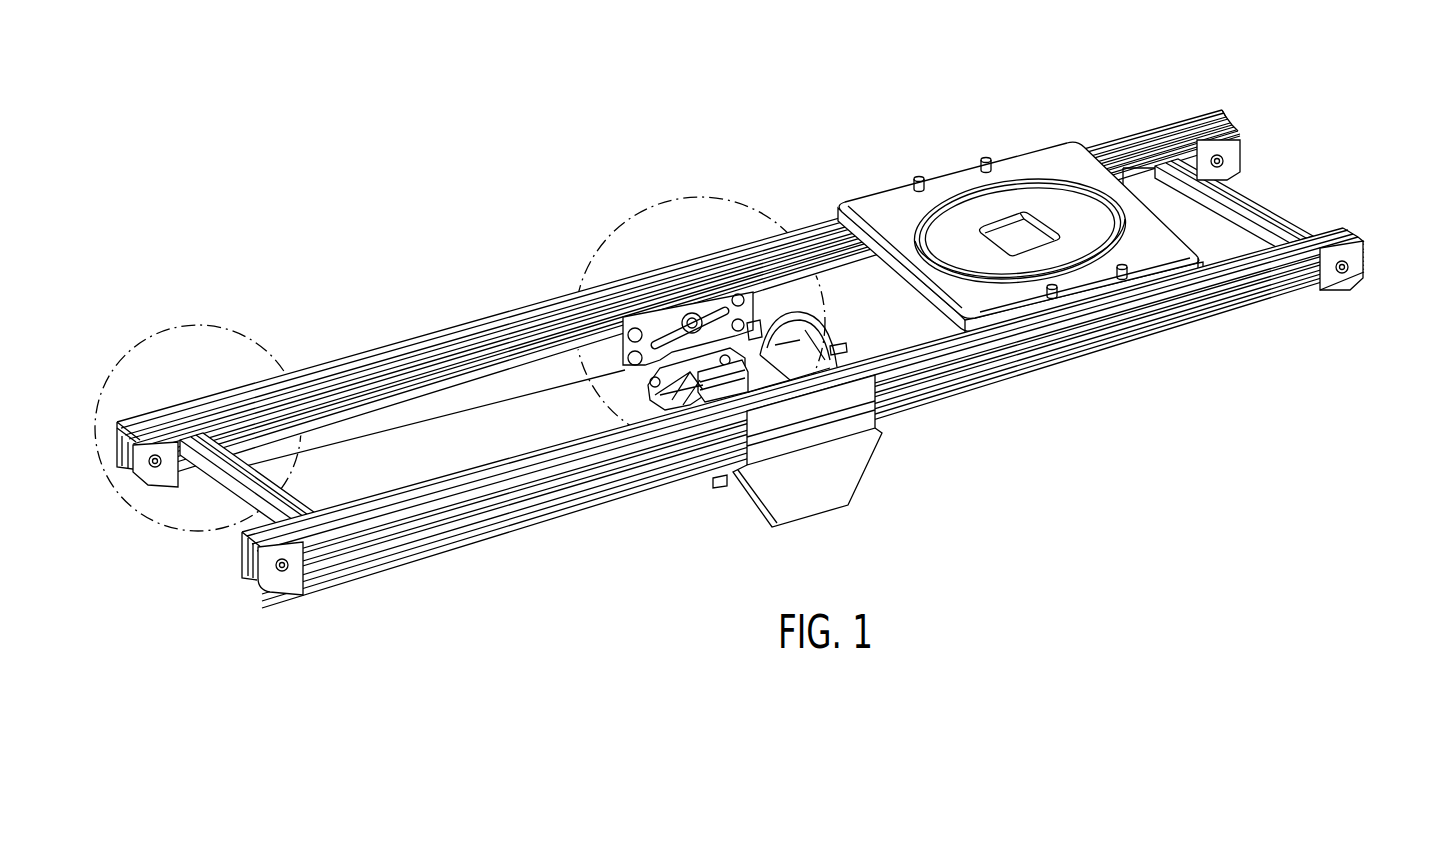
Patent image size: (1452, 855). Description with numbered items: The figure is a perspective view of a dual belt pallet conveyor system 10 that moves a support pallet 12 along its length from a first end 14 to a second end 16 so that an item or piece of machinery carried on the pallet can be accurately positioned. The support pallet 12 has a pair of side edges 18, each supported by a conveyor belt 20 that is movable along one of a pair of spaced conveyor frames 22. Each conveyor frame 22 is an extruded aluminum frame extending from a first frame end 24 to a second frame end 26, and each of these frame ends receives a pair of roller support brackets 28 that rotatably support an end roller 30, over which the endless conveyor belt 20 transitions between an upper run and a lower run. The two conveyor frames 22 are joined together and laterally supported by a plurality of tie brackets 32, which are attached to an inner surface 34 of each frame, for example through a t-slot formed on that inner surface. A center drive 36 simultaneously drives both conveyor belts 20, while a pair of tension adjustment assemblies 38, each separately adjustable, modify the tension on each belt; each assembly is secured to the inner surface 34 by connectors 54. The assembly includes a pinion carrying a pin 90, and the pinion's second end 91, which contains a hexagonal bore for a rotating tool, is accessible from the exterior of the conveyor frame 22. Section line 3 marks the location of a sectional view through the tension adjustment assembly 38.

The dual belt pallet conveyor system 10 is at (511, 238).
The support pallet 12 is at (1057, 160).
The first end 14 is at (1276, 175).
The second end 16 is at (184, 508).
The side edges 18 is at (948, 170).
The conveyor belt 20 is at (1163, 147).
The conveyor frames 22 is at (437, 375).
The first frame end 24 is at (1320, 287).
The second frame end 26 is at (300, 593).
The roller support brackets 28 is at (1353, 268).
The end roller 30 is at (248, 570).
The tie brackets 32 is at (225, 502).
The inner surface 34 is at (469, 398).
The center drive 36 is at (835, 340).
The tension adjustment assemblies 38 is at (699, 276).
The connector 54 is at (748, 287).
The pin 90 is at (688, 313).
The second end 91 is at (807, 430).
The section line 3 is at (583, 380).